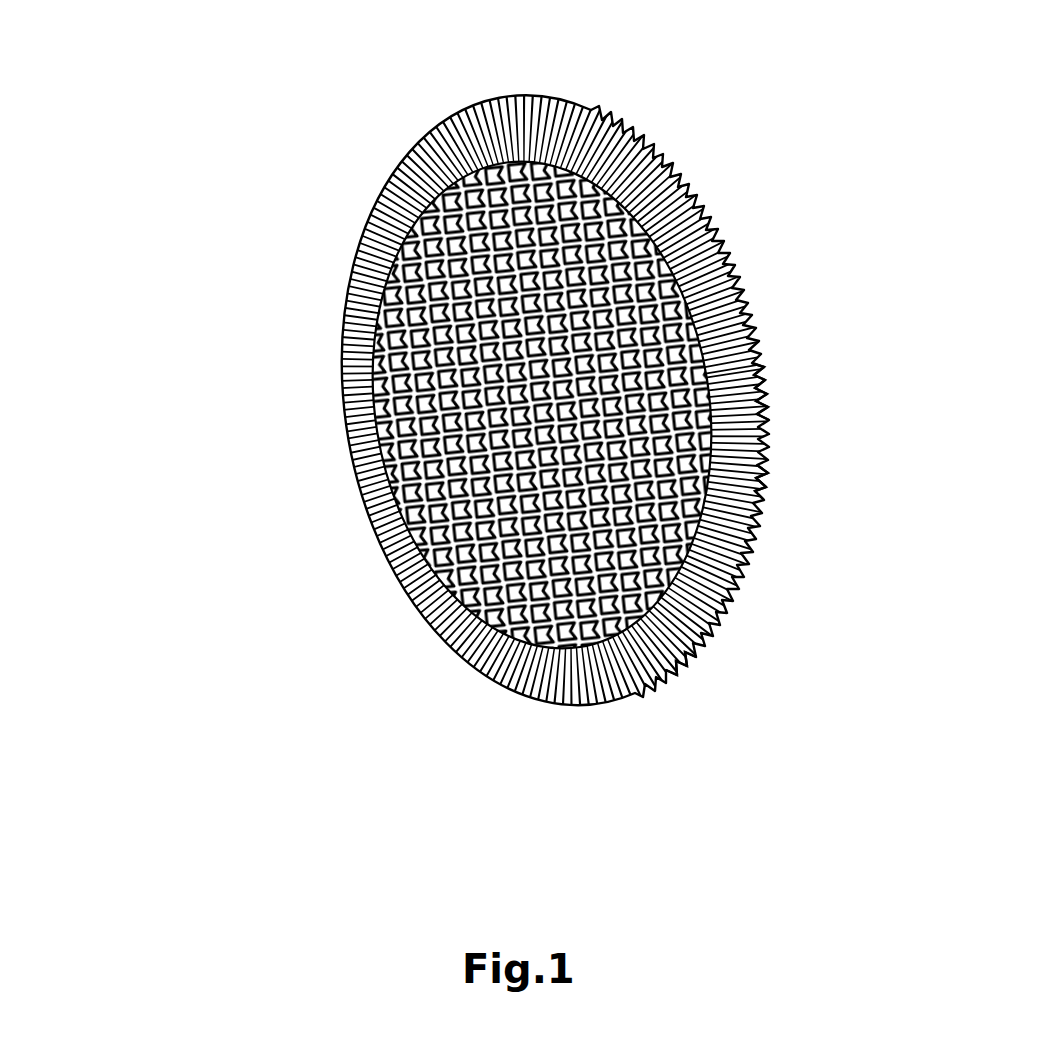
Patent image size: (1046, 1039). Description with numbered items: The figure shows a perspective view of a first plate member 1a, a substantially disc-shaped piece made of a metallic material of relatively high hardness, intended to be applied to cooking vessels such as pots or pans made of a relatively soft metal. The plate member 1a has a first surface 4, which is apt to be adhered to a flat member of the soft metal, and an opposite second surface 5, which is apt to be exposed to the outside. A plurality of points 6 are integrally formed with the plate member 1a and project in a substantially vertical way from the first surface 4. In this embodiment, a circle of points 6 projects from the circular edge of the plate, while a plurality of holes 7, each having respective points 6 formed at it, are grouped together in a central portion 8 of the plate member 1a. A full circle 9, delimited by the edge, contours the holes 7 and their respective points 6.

The first plate member 1a is at (478, 407).
The first surface 4 is at (777, 303).
The second surface 5 is at (320, 391).
The points 6 is at (752, 368).
The hole 7 is at (766, 476).
The central portion 8 is at (668, 188).
The full circle 9 is at (617, 118).